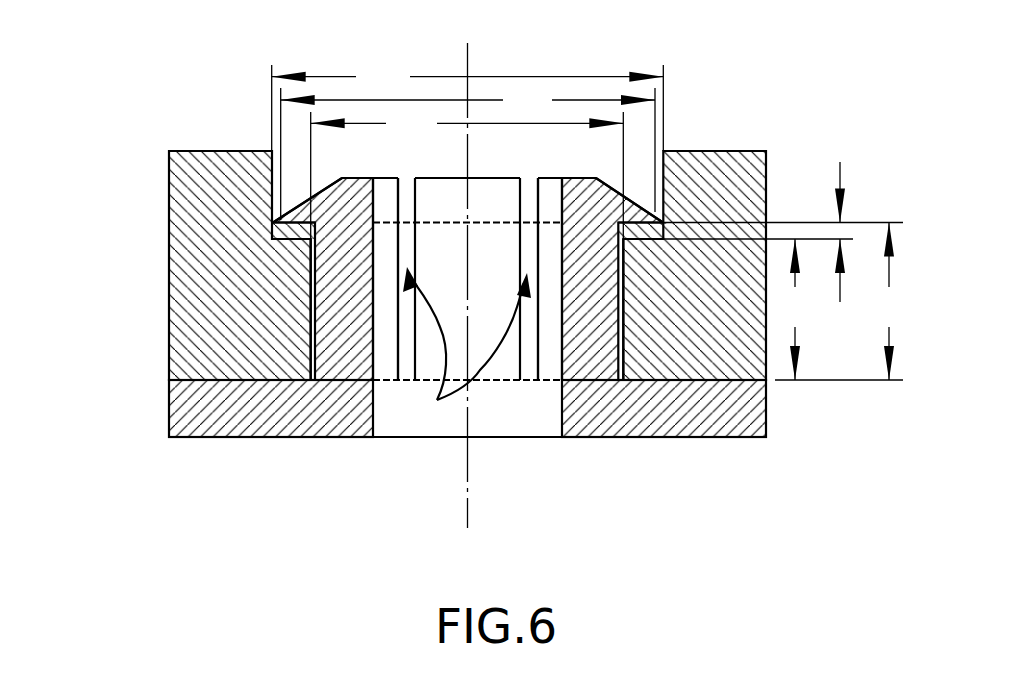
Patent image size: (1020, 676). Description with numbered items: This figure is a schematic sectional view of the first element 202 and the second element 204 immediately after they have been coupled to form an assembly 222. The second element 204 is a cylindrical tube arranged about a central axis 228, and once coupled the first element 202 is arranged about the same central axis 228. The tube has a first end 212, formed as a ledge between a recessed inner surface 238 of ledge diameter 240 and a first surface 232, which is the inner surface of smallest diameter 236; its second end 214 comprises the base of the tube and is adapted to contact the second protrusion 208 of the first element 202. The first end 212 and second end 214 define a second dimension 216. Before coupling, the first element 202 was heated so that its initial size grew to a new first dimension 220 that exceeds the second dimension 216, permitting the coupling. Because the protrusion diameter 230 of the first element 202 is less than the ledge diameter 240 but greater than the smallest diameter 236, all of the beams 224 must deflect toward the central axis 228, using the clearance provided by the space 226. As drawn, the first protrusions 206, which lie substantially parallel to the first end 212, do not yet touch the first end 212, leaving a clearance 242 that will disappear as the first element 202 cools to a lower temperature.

The first element 202 is at (183, 413).
The second element 204 is at (750, 167).
The first protrusions 206 is at (277, 219).
The second protrusion 208 is at (189, 378).
The first end 212 is at (273, 222).
The second end 214 is at (254, 381).
The second dimension 216 is at (838, 309).
The first dimension 220 is at (888, 302).
The assembly 222 is at (95, 220).
The beams 224 is at (427, 335).
The space 226 is at (437, 400).
The central axis 228 is at (468, 269).
The protrusion diameter 230 is at (468, 151).
The first surface 232 is at (613, 352).
The smallest diameter 236 is at (467, 172).
The recessed inner surface 238 is at (660, 179).
The ledge diameter 240 is at (468, 105).
The clearance 242 is at (842, 170).